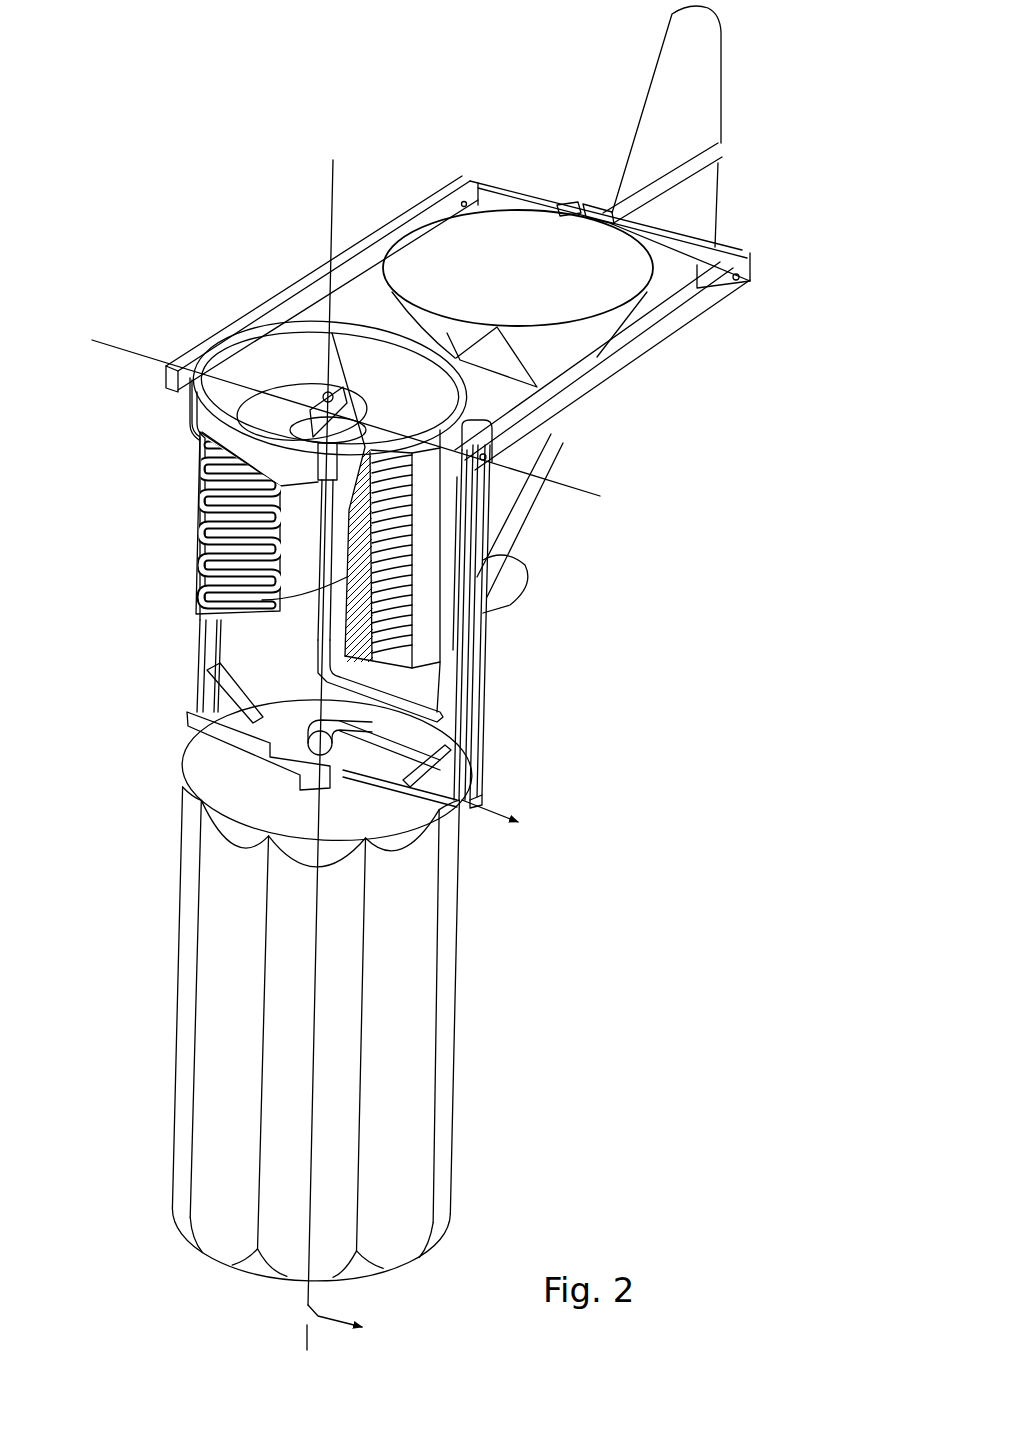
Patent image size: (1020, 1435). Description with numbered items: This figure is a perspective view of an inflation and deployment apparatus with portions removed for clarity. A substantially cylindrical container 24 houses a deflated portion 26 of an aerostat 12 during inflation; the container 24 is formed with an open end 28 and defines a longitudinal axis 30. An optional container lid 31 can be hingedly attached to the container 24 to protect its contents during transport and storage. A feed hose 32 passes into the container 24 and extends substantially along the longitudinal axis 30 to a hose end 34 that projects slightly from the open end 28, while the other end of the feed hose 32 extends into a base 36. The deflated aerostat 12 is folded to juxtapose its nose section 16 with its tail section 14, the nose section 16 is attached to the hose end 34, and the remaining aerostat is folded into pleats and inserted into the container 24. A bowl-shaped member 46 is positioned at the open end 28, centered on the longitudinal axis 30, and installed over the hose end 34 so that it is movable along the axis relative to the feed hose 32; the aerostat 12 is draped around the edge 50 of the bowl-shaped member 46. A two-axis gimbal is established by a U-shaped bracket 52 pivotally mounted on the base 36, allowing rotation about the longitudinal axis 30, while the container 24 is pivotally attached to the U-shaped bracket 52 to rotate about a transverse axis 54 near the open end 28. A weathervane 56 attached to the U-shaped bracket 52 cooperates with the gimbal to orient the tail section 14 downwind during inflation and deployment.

The aerostat 12 is at (278, 293).
The tail section 14 is at (430, 381).
The nose section 16 is at (198, 502).
The cylindrical container 24 is at (193, 597).
The deflated portion 26 is at (405, 712).
The open end 28 is at (302, 468).
The longitudinal axis 30 is at (333, 197).
The container lid 31 is at (563, 202).
The feed hose 32 is at (280, 545).
The hose end 34 is at (298, 440).
The base 36 is at (176, 995).
The bowl-shaped member 46 is at (330, 508).
The edge 50 is at (192, 407).
The U-shaped bracket 52 is at (197, 650).
The transverse axis 54 is at (142, 355).
The weathervane 56 is at (722, 77).